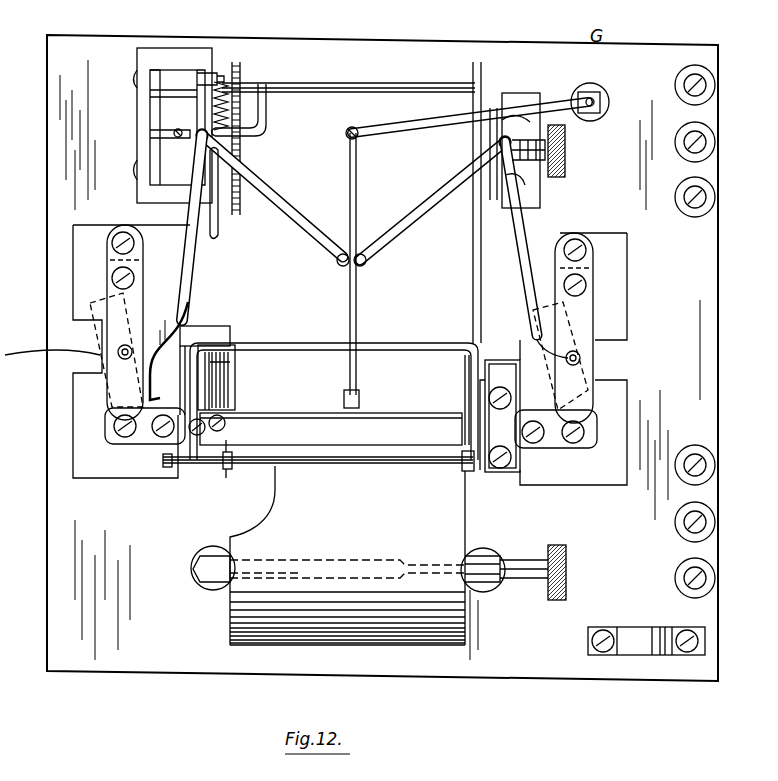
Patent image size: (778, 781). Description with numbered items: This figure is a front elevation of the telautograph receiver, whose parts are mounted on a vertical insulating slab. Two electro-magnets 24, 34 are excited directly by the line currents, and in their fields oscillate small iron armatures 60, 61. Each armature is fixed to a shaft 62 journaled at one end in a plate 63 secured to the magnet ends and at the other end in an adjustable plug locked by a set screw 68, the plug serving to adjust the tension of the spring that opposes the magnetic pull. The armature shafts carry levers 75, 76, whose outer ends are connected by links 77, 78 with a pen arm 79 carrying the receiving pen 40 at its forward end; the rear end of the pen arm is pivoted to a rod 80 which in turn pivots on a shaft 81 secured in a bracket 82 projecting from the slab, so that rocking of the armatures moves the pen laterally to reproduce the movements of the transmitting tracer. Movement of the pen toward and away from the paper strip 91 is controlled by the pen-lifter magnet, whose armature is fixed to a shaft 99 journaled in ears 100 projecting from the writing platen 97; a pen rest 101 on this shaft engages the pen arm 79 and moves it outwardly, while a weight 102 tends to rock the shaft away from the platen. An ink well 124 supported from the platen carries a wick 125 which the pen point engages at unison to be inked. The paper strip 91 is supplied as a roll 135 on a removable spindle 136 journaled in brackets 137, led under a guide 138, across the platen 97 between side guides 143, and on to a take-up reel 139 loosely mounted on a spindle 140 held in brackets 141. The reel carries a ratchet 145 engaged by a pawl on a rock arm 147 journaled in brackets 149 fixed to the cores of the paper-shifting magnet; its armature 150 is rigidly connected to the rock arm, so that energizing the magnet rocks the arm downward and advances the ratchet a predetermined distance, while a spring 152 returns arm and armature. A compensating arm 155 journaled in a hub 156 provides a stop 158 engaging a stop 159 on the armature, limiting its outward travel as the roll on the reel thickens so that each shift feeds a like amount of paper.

The electro-magnet 24 is at (625, 428).
The electro-magnet 34 is at (73, 320).
The receiving pen 40 is at (360, 404).
The armature 60 is at (596, 382).
The armature 61 is at (102, 330).
The shaft 62 is at (520, 350).
The plate 63 is at (100, 380).
The set screw 68 is at (108, 356).
The lever 75 is at (522, 226).
The lever 76 is at (185, 222).
The link 77 is at (434, 194).
The link 78 is at (258, 152).
The pen arm 79 is at (357, 308).
The rod 80 is at (436, 112).
The shaft 81 is at (595, 102).
The bracket 82 is at (598, 90).
The paper strip 91 is at (268, 500).
The platen 97 is at (200, 334).
The shaft 99 is at (424, 465).
The ears 100 is at (228, 468).
The pen rest 101 is at (410, 350).
The weight 102 is at (500, 472).
The ink well 124 is at (222, 394).
The wick 125 is at (228, 358).
The roll 135 is at (230, 622).
The spindle 136 is at (528, 582).
The brackets 137 is at (203, 560).
The guide 138 is at (331, 429).
The take-up reel 139 is at (482, 82).
The spindle 140 is at (535, 165).
The brackets 141 is at (515, 94).
The side guides 143 is at (232, 397).
The ratchet 145 is at (238, 62).
The rock arm 147 is at (215, 238).
The brackets 149 is at (150, 74).
The armature 150 is at (177, 110).
The spring 152 is at (230, 86).
The arm 155 is at (270, 84).
The hub 156 is at (262, 132).
The stop 158 is at (180, 139).
The stop 159 is at (174, 132).